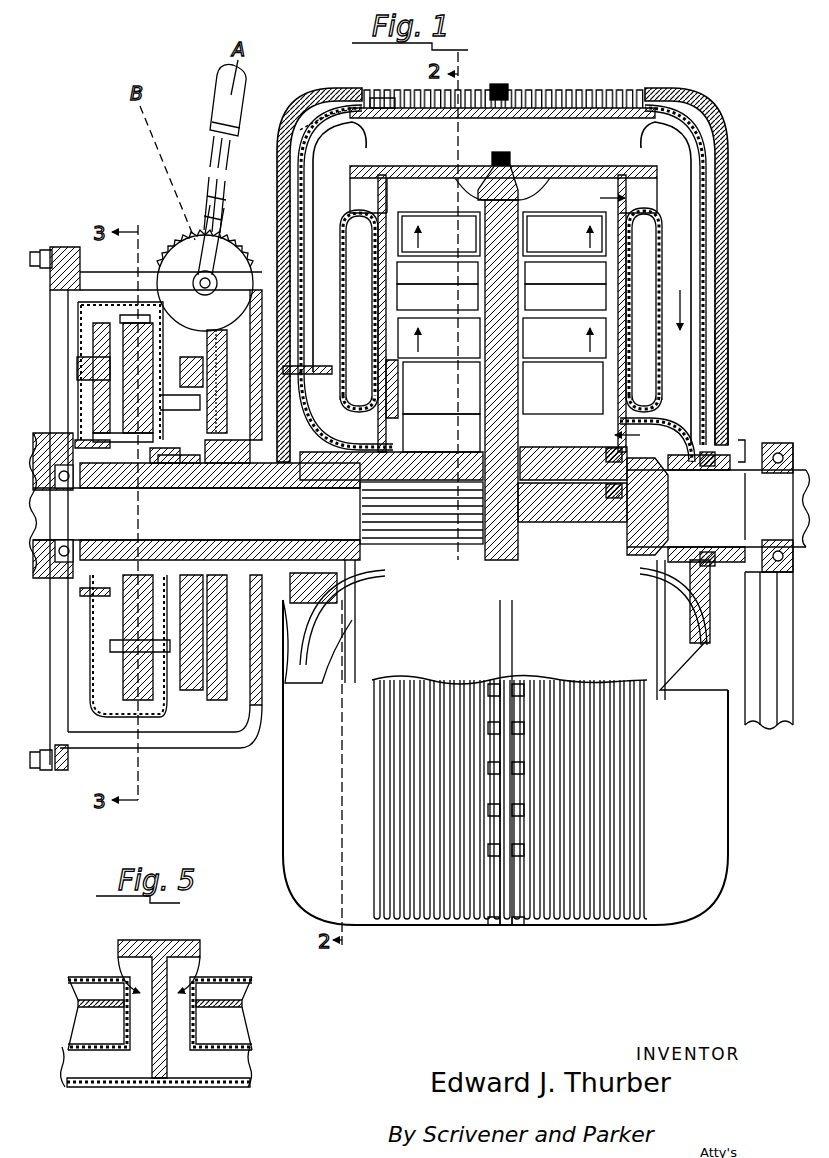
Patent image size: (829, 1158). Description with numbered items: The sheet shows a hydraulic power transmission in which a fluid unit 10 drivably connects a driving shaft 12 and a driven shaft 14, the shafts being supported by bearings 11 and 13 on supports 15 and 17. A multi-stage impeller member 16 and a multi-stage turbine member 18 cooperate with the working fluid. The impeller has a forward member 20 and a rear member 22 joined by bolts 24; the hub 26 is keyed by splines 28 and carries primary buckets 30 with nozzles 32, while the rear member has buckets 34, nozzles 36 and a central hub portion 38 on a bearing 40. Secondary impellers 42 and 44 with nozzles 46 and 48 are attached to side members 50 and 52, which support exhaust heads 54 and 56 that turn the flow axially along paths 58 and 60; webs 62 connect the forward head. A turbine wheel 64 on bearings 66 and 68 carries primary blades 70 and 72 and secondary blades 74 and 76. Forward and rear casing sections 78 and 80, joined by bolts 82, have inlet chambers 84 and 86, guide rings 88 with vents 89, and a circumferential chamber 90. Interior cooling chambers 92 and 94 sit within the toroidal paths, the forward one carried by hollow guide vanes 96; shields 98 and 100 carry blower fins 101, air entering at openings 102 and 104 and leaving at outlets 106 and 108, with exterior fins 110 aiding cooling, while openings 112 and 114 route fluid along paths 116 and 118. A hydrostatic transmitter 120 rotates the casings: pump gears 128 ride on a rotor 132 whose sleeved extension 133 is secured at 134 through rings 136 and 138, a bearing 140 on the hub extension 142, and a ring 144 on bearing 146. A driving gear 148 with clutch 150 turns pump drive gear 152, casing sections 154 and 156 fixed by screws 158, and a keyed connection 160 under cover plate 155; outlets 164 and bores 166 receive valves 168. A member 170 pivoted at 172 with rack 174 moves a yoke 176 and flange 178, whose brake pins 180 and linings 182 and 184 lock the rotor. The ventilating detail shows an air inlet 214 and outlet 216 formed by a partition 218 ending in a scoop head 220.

In FIG. 1, the fluid unit 10 is at (572, 78).
In FIG. 1, the bearing 11 is at (76, 486).
In FIG. 1, the driving shaft 12 is at (195, 503).
In FIG. 1, the bearing 13 is at (782, 443).
In FIG. 1, the driven shaft 14 is at (718, 508).
In FIG. 1, the support 15 is at (258, 330).
In FIG. 1, the impeller member 16 is at (470, 452).
In FIG. 1, the support 17 is at (770, 700).
In FIG. 1, the turbine member 18 is at (530, 212).
In FIG. 1, the forward impeller member 20 is at (420, 166).
In FIG. 1, the rear impeller member 22 is at (556, 158).
In FIG. 1, the bolts 24 is at (506, 162).
In FIG. 1, the hub 26 is at (446, 456).
In FIG. 1, the splines 28 is at (364, 512).
In FIG. 1, the primary buckets 30 is at (443, 388).
In FIG. 1, the outlet nozzles 32 is at (441, 388).
In FIG. 1, the primary buckets 34 is at (542, 396).
In FIG. 1, the nozzles 36 is at (563, 388).
In FIG. 1, the central hub portion 38 is at (568, 400).
In FIG. 1, the bearing 40 is at (656, 476).
In FIG. 1, the secondary impeller 42 is at (437, 297).
In FIG. 1, the secondary impeller 44 is at (565, 297).
In FIG. 1, the nozzles 46 is at (437, 275).
In FIG. 1, the nozzles 48 is at (565, 275).
In FIG. 1, the side member 50 is at (380, 276).
In FIG. 1, the side member 52 is at (622, 266).
In FIG. 1, the forward impeller exhaust head 54 is at (415, 168).
In FIG. 1, the rear impeller exhaust head 56 is at (630, 168).
In FIG. 1, the fluid path 58 is at (345, 210).
In FIG. 1, the fluid path 60 is at (630, 195).
In FIG. 1, the webs or vanes 62 is at (389, 203).
In FIG. 1, the turbine wheel 64 is at (516, 244).
In FIG. 1, the bearing 66 is at (504, 472).
In FIG. 1, the bearing 68 is at (606, 496).
In FIG. 1, the forward primary turbine blades 70 is at (439, 338).
In FIG. 1, the rear primary turbine blades 72 is at (564, 338).
In FIG. 1, the secondary forward turbine blades 74 is at (439, 234).
In FIG. 1, the secondary rear turbine blades 76 is at (564, 234).
In FIG. 1, the forward casing section 78 is at (342, 112).
In FIG. 5, the forward casing section 78 is at (80, 1004).
In FIG. 1, the rear casing section 80 is at (672, 120).
In FIG. 1, the bolts 82 is at (499, 86).
In FIG. 1, the inlet chamber 84 is at (463, 463).
In FIG. 1, the inlet chamber 86 is at (622, 442).
In FIG. 1, the fluid guide ring 88 is at (354, 153).
In FIG. 1, the vents 89 is at (283, 140).
In FIG. 1, the circumferential chamber 90 is at (650, 132).
In FIG. 1, the forward interior cooling chamber 92 is at (372, 316).
In FIG. 5, the forward interior cooling chamber 92 is at (80, 1086).
In FIG. 1, the rear interior cooling chamber 94 is at (662, 308).
In FIG. 1, the hollow fluid guide vanes 96 is at (300, 282).
In FIG. 1, the shield 98 is at (312, 104).
In FIG. 5, the shield 98 is at (112, 976).
In FIG. 1, the shield 100 is at (708, 126).
In FIG. 1, the air blower fins 101 is at (289, 183).
In FIG. 5, the air blower fins 101 is at (100, 990).
In FIG. 1, the annular opening 102 is at (305, 372).
In FIG. 1, the annular opening 104 is at (732, 392).
In FIG. 1, the outlet opening 106 is at (375, 95).
In FIG. 1, the outlet opening 108 is at (648, 108).
In FIG. 1, the cooling fins 110 is at (606, 918).
In FIG. 1, the openings 112 is at (382, 428).
In FIG. 1, the openings 114 is at (628, 422).
In FIG. 1, the fluid path 116 is at (380, 380).
In FIG. 1, the fluid path 118 is at (624, 340).
In FIG. 1, the infinitely variable torque transmitter 120 is at (200, 760).
In FIG. 1, the pump gear 128 is at (140, 322).
In FIG. 1, the rotor 132 is at (142, 350).
In FIG. 1, the sleeved extension 133 is at (210, 470).
In FIG. 1, the keyed connection 134 is at (300, 472).
In FIG. 1, the ring 136 is at (262, 472).
In FIG. 1, the ring 138 is at (338, 470).
In FIG. 1, the bearing 140 is at (305, 476).
In FIG. 1, the sleeved extension 142 is at (215, 510).
In FIG. 1, the ring 144 is at (690, 470).
In FIG. 1, the bearing 146 is at (714, 468).
In FIG. 1, the driving gear 148 is at (104, 630).
In FIG. 1, the positive clutch 150 is at (118, 522).
In FIG. 1, the pump drive gear 152 is at (94, 338).
In FIG. 1, the casing section 154 is at (88, 316).
In FIG. 1, the cover plate 155 is at (113, 320).
In FIG. 1, the casing section 156 is at (162, 352).
In FIG. 1, the screws 158 is at (82, 440).
In FIG. 1, the keyed connection 160 is at (104, 366).
In FIG. 1, the outlets 164 is at (192, 404).
In FIG. 1, the transverse bore 166 is at (100, 430).
In FIG. 1, the cylindrical valve 168 is at (130, 488).
In FIG. 1, the manually operable member 170 is at (216, 122).
In FIG. 1, the pivot 172 is at (214, 268).
In FIG. 1, the detent and rack construction 174 is at (196, 232).
In FIG. 1, the yoke 176 is at (205, 672).
In FIG. 1, the valve operating flange 178 is at (172, 478).
In FIG. 1, the brake pins 180 is at (138, 652).
In FIG. 1, the brake lining 182 is at (222, 398).
In FIG. 1, the brake lining 184 is at (233, 381).
In FIG. 5, the air inlet 214 is at (178, 958).
In FIG. 5, the air outlet 216 is at (143, 957).
In FIG. 5, the partition 218 is at (156, 1040).
In FIG. 5, the scoop head 220 is at (158, 940).